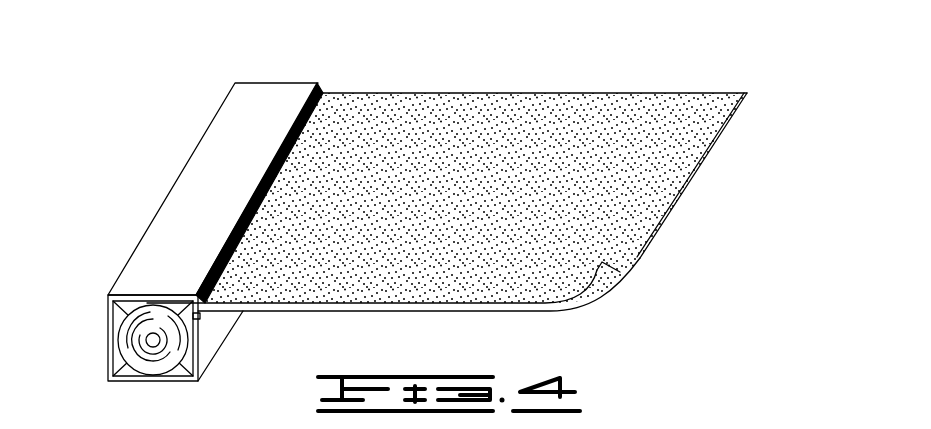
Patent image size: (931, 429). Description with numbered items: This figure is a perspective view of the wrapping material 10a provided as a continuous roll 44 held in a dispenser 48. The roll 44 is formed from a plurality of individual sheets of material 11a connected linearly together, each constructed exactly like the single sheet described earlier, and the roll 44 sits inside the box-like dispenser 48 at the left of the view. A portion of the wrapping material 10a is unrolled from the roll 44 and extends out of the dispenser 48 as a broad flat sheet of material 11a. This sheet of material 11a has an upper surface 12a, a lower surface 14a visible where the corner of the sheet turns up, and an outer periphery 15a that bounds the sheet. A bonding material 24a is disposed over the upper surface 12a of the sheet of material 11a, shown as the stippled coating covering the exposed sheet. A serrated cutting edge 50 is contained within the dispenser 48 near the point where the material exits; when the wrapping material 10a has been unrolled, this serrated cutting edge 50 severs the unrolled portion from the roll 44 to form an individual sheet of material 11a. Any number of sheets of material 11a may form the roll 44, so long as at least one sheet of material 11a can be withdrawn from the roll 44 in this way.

The wrapping material 10a is at (410, 197).
The sheet of material 11a is at (468, 198).
The upper surface 12a is at (678, 148).
The bonding material 24a is at (612, 199).
The lower surface 14a is at (610, 273).
The outer periphery 15a is at (478, 314).
The dispenser 48 is at (218, 150).
The roll 44 is at (140, 343).
The serrated cutting edge 50 is at (205, 318).